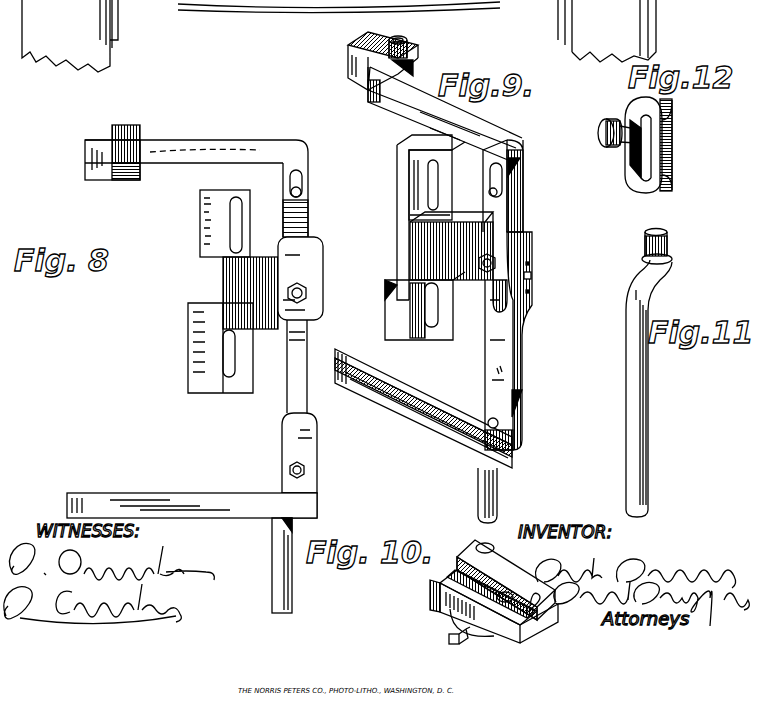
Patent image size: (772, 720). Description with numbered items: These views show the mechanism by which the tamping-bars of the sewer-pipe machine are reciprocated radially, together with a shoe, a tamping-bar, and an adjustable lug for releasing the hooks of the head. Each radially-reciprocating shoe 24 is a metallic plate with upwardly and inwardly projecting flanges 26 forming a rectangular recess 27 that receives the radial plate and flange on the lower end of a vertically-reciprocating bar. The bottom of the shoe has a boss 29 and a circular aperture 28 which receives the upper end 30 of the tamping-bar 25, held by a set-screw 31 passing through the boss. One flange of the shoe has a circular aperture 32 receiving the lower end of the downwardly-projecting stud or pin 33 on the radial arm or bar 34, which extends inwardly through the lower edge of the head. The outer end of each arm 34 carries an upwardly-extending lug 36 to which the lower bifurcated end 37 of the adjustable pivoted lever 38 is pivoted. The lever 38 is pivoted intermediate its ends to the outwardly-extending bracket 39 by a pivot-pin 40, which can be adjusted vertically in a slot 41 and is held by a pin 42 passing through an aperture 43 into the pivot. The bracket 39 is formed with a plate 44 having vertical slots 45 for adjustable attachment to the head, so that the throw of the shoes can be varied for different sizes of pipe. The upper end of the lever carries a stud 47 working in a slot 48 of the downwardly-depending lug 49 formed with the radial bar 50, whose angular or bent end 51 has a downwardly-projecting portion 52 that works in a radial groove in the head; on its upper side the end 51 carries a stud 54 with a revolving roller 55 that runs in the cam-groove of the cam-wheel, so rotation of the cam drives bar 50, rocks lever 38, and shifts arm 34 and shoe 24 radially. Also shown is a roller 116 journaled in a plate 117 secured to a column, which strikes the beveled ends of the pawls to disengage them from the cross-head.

In FIG. 10, the radially-reciprocating shoe 24 is at (475, 611).
In FIG. 11, the tamping-bar 25 is at (630, 380).
In FIG. 10, the flange 26 is at (468, 556).
In FIG. 10, the rectangular recess 27 is at (460, 576).
In FIG. 10, the circular aperture 28 is at (504, 604).
In FIG. 10, the boss 29 is at (447, 630).
In FIG. 11, the upper end of tamping-bar 30 is at (657, 234).
In FIG. 10, the set-screw 31 is at (452, 645).
In FIG. 10, the circular aperture 32 is at (492, 546).
In FIG. 8, the downwardly-projecting stud or pin 33 is at (278, 574).
In FIG. 9, the downwardly-projecting stud or pin 33 is at (478, 489).
In FIG. 8, the radial arm or bar 34 is at (192, 494).
In FIG. 9, the radial arm or bar 34 is at (423, 408).
In FIG. 8, the upwardly-extending lug 36 is at (318, 488).
In FIG. 9, the upwardly-extending lug 36 is at (518, 444).
In FIG. 8, the lower bifurcated end 37 is at (288, 462).
In FIG. 8, the adjustable pivoted lever 38 is at (313, 284).
In FIG. 9, the adjustable pivoted lever 38 is at (517, 341).
In FIG. 8, the outwardly-extending bracket 39 is at (250, 293).
In FIG. 9, the outwardly-extending bracket 39 is at (422, 253).
In FIG. 8, the pivot-pin 40 is at (303, 294).
In FIG. 9, the pivot-pin 40 is at (484, 273).
In FIG. 8, the slot 41 is at (298, 338).
In FIG. 9, the slot 41 is at (510, 304).
In FIG. 9, the pin 42 is at (531, 276).
In FIG. 9, the aperture 43 is at (530, 263).
In FIG. 8, the plate 44 is at (205, 364).
In FIG. 9, the plate 44 is at (396, 149).
In FIG. 8, the vertical slot 45 is at (230, 243).
In FIG. 9, the vertical slot 45 is at (426, 191).
In FIG. 8, the stud 47 is at (304, 198).
In FIG. 9, the stud 47 is at (492, 196).
In FIG. 8, the slot 48 is at (290, 180).
In FIG. 9, the slot 48 is at (490, 175).
In FIG. 8, the downwardly-depending lug 49 is at (306, 157).
In FIG. 9, the downwardly-depending lug 49 is at (522, 171).
In FIG. 8, the radial bar 50 is at (196, 141).
In FIG. 9, the radial bar 50 is at (490, 132).
In FIG. 8, the angular or bent end 51 is at (110, 147).
In FIG. 9, the angular or bent end 51 is at (408, 50).
In FIG. 8, the downwardly-projecting portion 52 is at (119, 183).
In FIG. 9, the stud 54 is at (362, 50).
In FIG. 8, the revolving roller 55 is at (138, 138).
In FIG. 9, the revolving roller 55 is at (388, 34).
In FIG. 12, the roller 116 is at (598, 135).
In FIG. 8, the plate 117 is at (62, 36).
In FIG. 12, the plate 117 is at (672, 148).